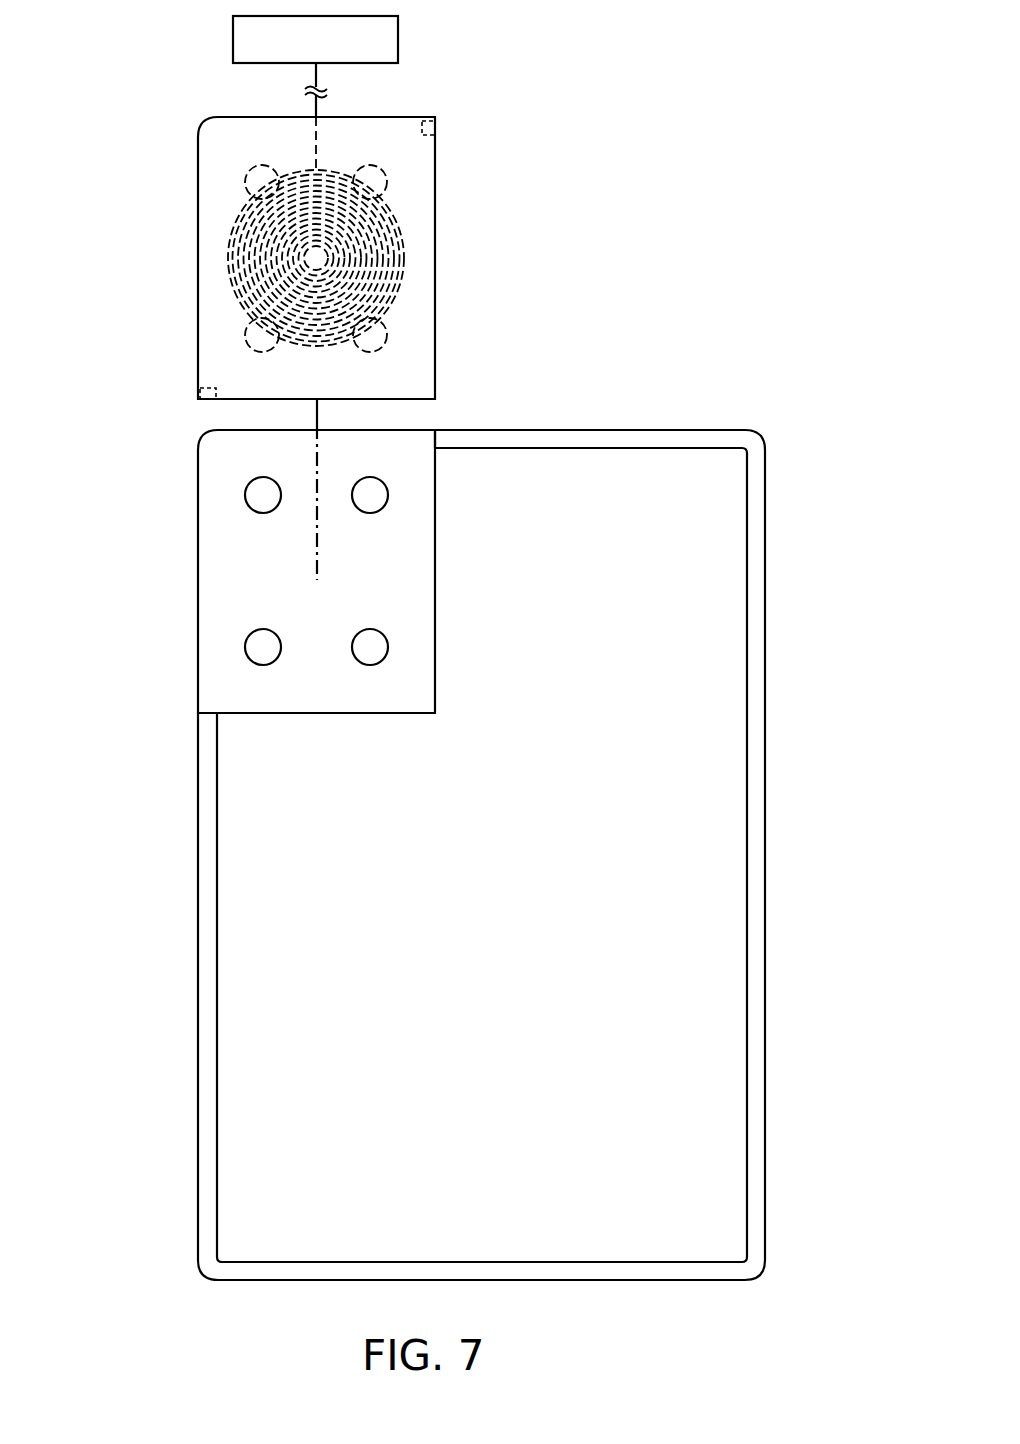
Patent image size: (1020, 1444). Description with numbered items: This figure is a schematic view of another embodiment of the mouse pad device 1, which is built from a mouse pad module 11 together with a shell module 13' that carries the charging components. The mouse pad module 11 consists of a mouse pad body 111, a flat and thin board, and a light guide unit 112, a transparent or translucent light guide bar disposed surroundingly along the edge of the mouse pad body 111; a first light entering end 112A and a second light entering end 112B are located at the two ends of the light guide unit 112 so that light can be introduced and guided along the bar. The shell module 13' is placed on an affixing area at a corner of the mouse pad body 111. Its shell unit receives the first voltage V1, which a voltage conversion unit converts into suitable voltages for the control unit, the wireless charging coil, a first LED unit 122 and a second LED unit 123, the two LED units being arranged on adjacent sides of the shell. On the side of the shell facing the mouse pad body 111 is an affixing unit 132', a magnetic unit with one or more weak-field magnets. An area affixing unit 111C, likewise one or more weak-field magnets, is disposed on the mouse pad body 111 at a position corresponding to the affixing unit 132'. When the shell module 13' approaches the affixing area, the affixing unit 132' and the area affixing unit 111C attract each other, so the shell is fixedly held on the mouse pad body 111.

The mouse pad device 1 is at (661, 110).
The first voltage V1 is at (398, 40).
The mouse pad module 11 is at (676, 430).
The mouse pad body 111 is at (257, 983).
The light guide unit 112 is at (207, 1086).
The first light entering end 112A is at (435, 441).
The second light entering end 112B is at (207, 712).
The area affixing unit 111C is at (257, 496).
The first LED unit 122 is at (437, 128).
The second LED unit 123 is at (205, 405).
The shell module 13' is at (355, 258).
The affixing unit 132' is at (394, 258).